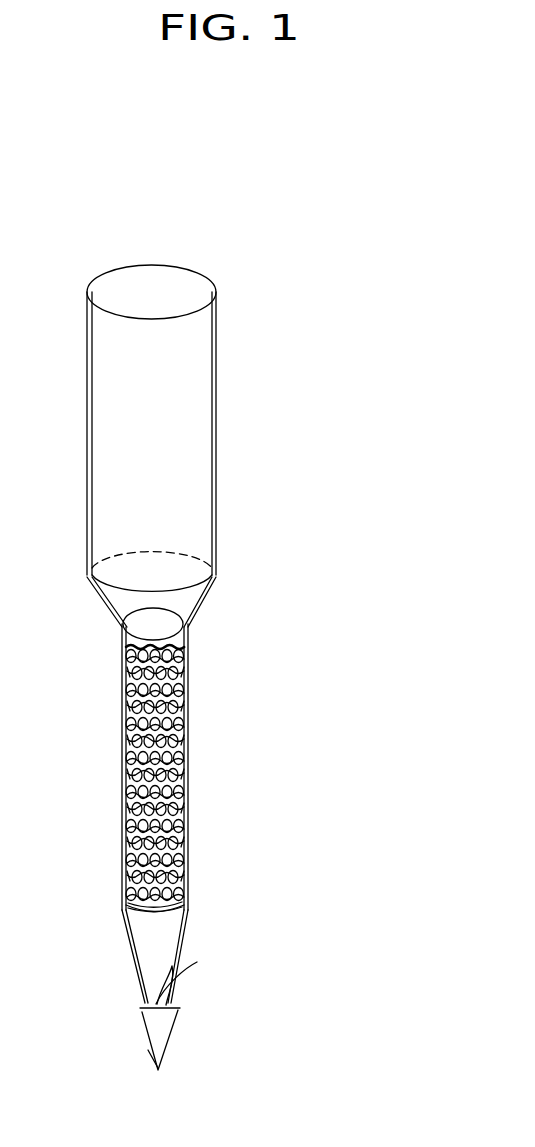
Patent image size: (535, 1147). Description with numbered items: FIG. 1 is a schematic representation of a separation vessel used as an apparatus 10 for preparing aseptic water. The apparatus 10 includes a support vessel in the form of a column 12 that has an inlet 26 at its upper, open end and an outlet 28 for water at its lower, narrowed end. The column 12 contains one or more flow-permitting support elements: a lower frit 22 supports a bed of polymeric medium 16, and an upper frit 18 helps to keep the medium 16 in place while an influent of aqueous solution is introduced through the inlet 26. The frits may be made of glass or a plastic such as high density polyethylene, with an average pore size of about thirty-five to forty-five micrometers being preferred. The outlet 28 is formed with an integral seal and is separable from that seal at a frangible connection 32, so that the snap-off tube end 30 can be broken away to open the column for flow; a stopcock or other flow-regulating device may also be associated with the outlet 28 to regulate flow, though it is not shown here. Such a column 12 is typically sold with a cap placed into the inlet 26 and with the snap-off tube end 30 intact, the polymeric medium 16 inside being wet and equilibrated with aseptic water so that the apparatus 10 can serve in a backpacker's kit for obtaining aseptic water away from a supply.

The apparatus 10 is at (303, 540).
The column 12 is at (217, 370).
The polymeric medium 16 is at (178, 812).
The upper frit 18 is at (188, 645).
The frit 22 is at (178, 880).
The inlet 26 is at (190, 302).
The outlet 28 is at (197, 962).
The snap-off tube end 30 is at (145, 1052).
The frangible connection 32 is at (140, 1007).